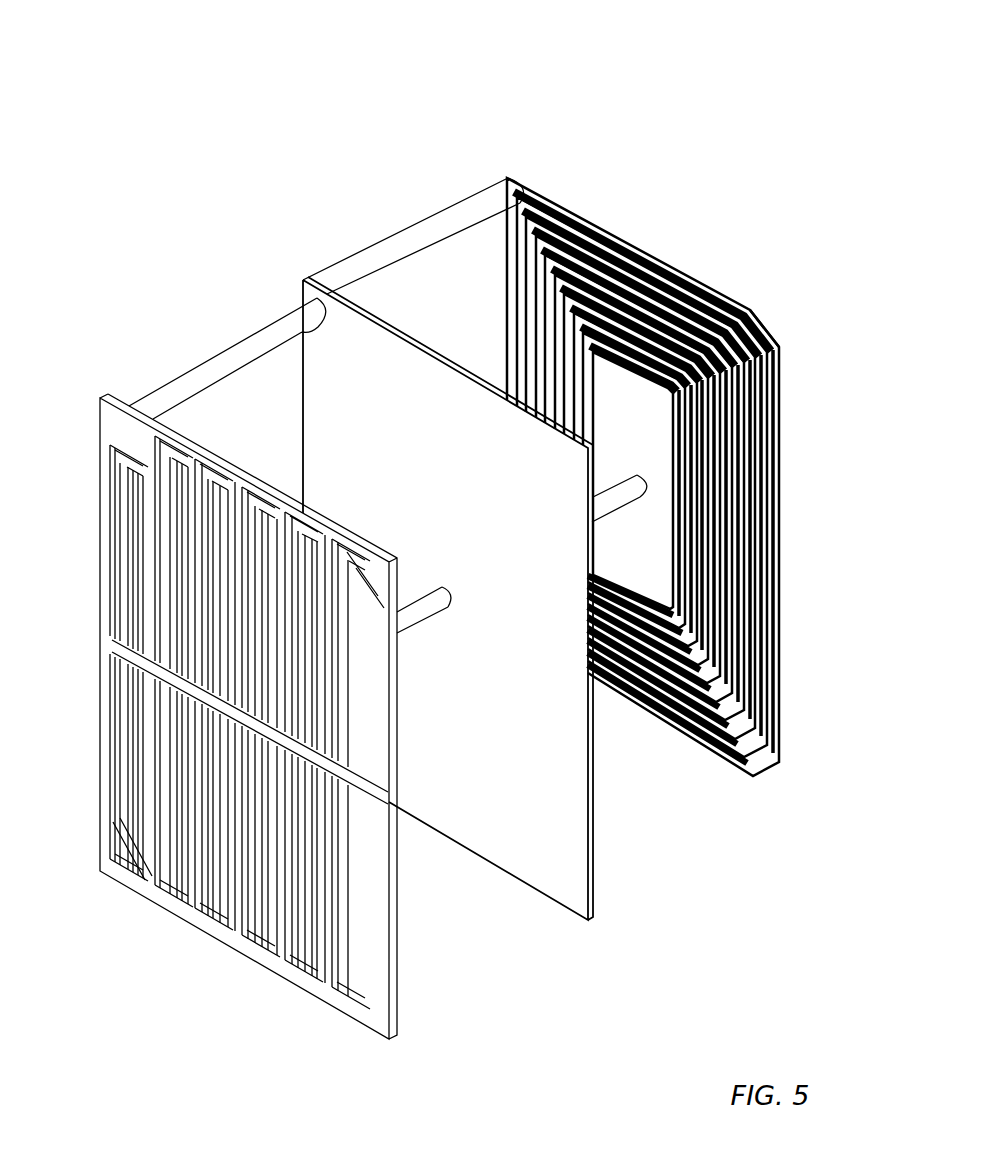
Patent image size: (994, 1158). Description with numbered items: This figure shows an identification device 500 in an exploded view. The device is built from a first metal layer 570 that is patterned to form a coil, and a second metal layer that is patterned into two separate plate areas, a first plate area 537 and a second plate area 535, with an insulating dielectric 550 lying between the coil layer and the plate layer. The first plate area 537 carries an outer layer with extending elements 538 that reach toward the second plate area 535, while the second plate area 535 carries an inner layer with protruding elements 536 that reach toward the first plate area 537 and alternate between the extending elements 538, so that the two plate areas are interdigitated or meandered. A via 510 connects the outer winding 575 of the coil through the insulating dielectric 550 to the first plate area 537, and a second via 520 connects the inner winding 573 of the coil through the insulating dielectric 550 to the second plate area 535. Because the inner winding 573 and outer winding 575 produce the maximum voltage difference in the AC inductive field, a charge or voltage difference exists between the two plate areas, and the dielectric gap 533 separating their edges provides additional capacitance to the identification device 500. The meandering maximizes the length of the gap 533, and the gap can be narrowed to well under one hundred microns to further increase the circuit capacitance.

The identification device 500 is at (208, 120).
The via 510 is at (470, 220).
The second via 520 is at (615, 502).
The dielectric gap 533 is at (125, 440).
The second plate area 535 is at (240, 712).
The protruding elements 536 is at (178, 885).
The first plate area 537 is at (373, 570).
The extending elements 538 is at (143, 562).
The insulating dielectric 550 is at (508, 661).
The first metal layer 570 is at (648, 437).
The inner winding 573 is at (682, 542).
The outer winding 575 is at (750, 305).